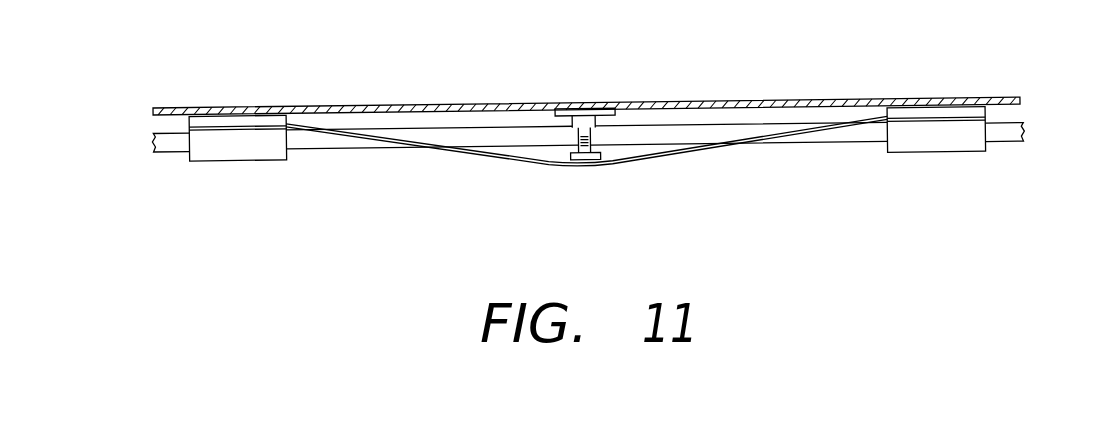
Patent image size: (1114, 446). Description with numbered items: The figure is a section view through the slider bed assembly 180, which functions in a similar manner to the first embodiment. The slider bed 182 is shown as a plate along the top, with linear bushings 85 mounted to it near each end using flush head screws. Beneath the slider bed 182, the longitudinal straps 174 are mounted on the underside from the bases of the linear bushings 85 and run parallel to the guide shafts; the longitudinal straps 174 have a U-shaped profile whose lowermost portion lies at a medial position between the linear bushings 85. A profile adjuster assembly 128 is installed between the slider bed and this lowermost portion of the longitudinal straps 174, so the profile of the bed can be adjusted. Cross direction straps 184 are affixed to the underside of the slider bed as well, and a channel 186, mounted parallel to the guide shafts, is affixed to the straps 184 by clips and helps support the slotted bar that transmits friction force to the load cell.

The linear bushings 85 is at (268, 120).
The profile adjuster assemblies 128 is at (577, 134).
The longitudinal straps 174 is at (680, 153).
The slider bed assembly 180 is at (601, 117).
The slider bed 182 is at (738, 101).
The straps 184 is at (229, 116).
The channel 186 is at (852, 134).